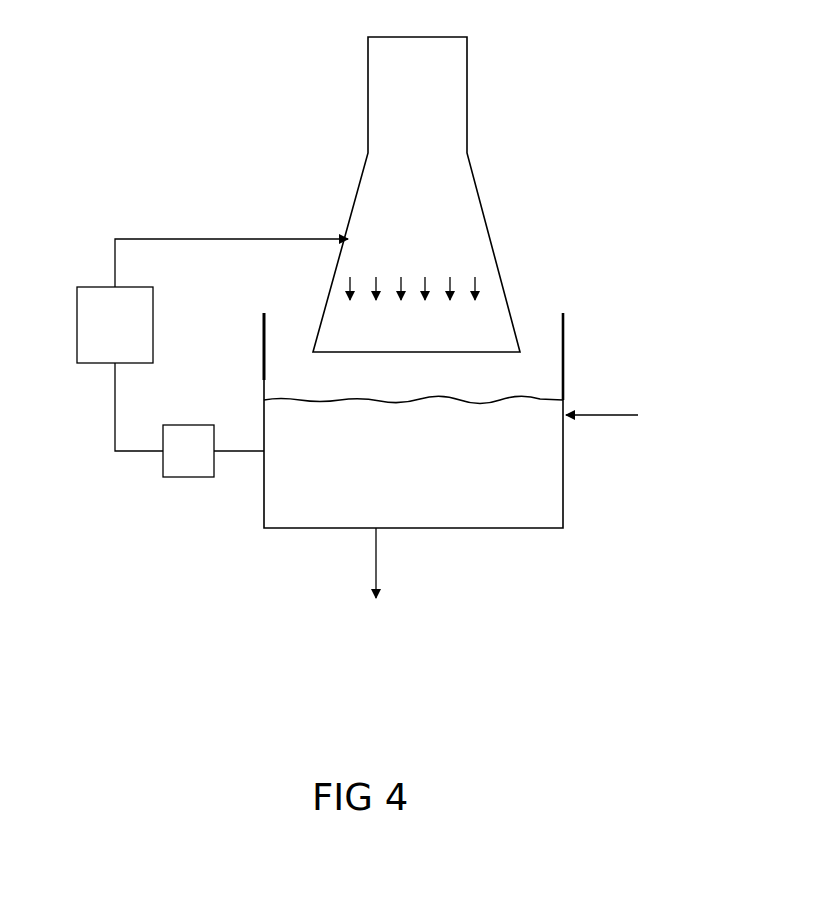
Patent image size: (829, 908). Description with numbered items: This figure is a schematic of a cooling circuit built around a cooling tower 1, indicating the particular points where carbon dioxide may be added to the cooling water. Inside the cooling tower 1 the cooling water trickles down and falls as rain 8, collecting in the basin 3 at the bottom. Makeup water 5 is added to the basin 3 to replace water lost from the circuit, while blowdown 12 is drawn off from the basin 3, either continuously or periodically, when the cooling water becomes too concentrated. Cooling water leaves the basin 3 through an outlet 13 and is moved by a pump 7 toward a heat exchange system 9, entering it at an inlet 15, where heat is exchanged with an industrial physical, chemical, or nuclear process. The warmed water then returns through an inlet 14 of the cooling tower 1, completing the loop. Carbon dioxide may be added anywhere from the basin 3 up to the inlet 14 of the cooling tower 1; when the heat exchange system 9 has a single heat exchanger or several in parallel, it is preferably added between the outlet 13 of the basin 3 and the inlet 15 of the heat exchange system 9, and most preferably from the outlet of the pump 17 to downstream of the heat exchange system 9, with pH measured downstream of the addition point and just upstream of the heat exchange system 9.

The cooling tower 1 is at (542, 87).
The basin 3 is at (425, 490).
The makeup water 5 is at (602, 415).
The pump 7 is at (188, 440).
The rain 8 is at (426, 337).
The heat exchange system 9 is at (100, 337).
The blowdown 12 is at (376, 551).
The outlet of the basin 13 is at (235, 480).
The inlet of the cooling tower 14 is at (326, 213).
The inlet of the heat exchange system 15 is at (98, 379).
The outlet of the pump 17 is at (135, 480).